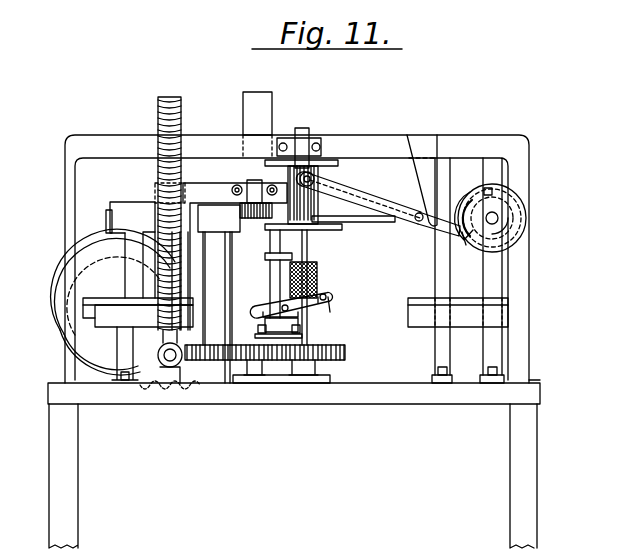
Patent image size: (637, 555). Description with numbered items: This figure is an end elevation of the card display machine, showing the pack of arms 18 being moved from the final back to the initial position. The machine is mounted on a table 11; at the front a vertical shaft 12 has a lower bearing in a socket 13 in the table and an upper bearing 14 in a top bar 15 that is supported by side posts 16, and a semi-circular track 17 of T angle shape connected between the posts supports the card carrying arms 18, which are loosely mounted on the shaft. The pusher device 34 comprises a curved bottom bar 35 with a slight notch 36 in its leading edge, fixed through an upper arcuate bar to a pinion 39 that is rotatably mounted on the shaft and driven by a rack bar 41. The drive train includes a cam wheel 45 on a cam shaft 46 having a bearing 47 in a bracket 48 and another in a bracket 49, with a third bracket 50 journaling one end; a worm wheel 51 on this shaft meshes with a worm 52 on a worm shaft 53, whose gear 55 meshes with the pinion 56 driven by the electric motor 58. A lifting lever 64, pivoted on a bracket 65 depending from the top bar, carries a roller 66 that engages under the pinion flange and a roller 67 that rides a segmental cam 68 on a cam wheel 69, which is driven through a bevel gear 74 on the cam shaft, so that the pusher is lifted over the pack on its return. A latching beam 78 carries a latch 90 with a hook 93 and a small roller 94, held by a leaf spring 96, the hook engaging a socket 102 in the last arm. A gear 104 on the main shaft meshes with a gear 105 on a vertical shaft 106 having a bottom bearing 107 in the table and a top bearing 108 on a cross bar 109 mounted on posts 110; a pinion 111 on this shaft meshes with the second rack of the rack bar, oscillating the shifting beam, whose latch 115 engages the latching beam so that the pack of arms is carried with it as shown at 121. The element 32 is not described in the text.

The table 11 is at (453, 404).
The vertical shaft 12 is at (308, 254).
The socket 13 is at (312, 372).
The upper bearing 14 is at (306, 146).
The top bar 15 is at (193, 146).
The side posts 16 is at (67, 230).
The semi-circular track 17 is at (100, 317).
The arms for carrying the cards 18 is at (326, 275).
The plate 32 is at (510, 303).
The pusher device 34 is at (330, 216).
The curved bottom bar 35 is at (272, 253).
The notch 36 is at (282, 265).
The pinion 39 is at (289, 178).
The rack bar 41 is at (278, 217).
The cam wheel 45 is at (254, 100).
The cam shaft 46 is at (370, 223).
The bearing 47 is at (191, 281).
The bracket 48 is at (212, 265).
The bracket 49 is at (125, 230).
The third bracket 50 is at (436, 280).
The worm wheel 51 is at (172, 98).
The worm 52 is at (166, 361).
The worm shaft 53 is at (164, 367).
The gear 55 is at (195, 398).
The pinion 56 is at (90, 300).
The electric motor 58 is at (83, 270).
The lifting lever 64 is at (378, 204).
The bracket 65 is at (421, 180).
The roller 66 is at (322, 162).
The roller 67 is at (477, 266).
The segmental cam 68 is at (489, 189).
The cam wheel 69 is at (517, 228).
The bevel gear 74 is at (460, 193).
The latching beam 78 is at (313, 323).
The latch 90 is at (278, 304).
The hook 93 is at (328, 295).
The small roller 94 is at (330, 303).
The leaf spring 96 is at (262, 327).
The socket 102 is at (323, 293).
The gear 104 is at (340, 351).
The gear 105 is at (228, 366).
The vertical shaft 106 is at (228, 224).
The bottom bearing 107 is at (260, 374).
The top bearing 108 is at (235, 247).
The cross bar 109 is at (176, 193).
The posts 110 is at (157, 222).
The pinion 111 is at (238, 203).
The latch 115 is at (277, 338).
The pack of arms being carried 121 is at (313, 318).